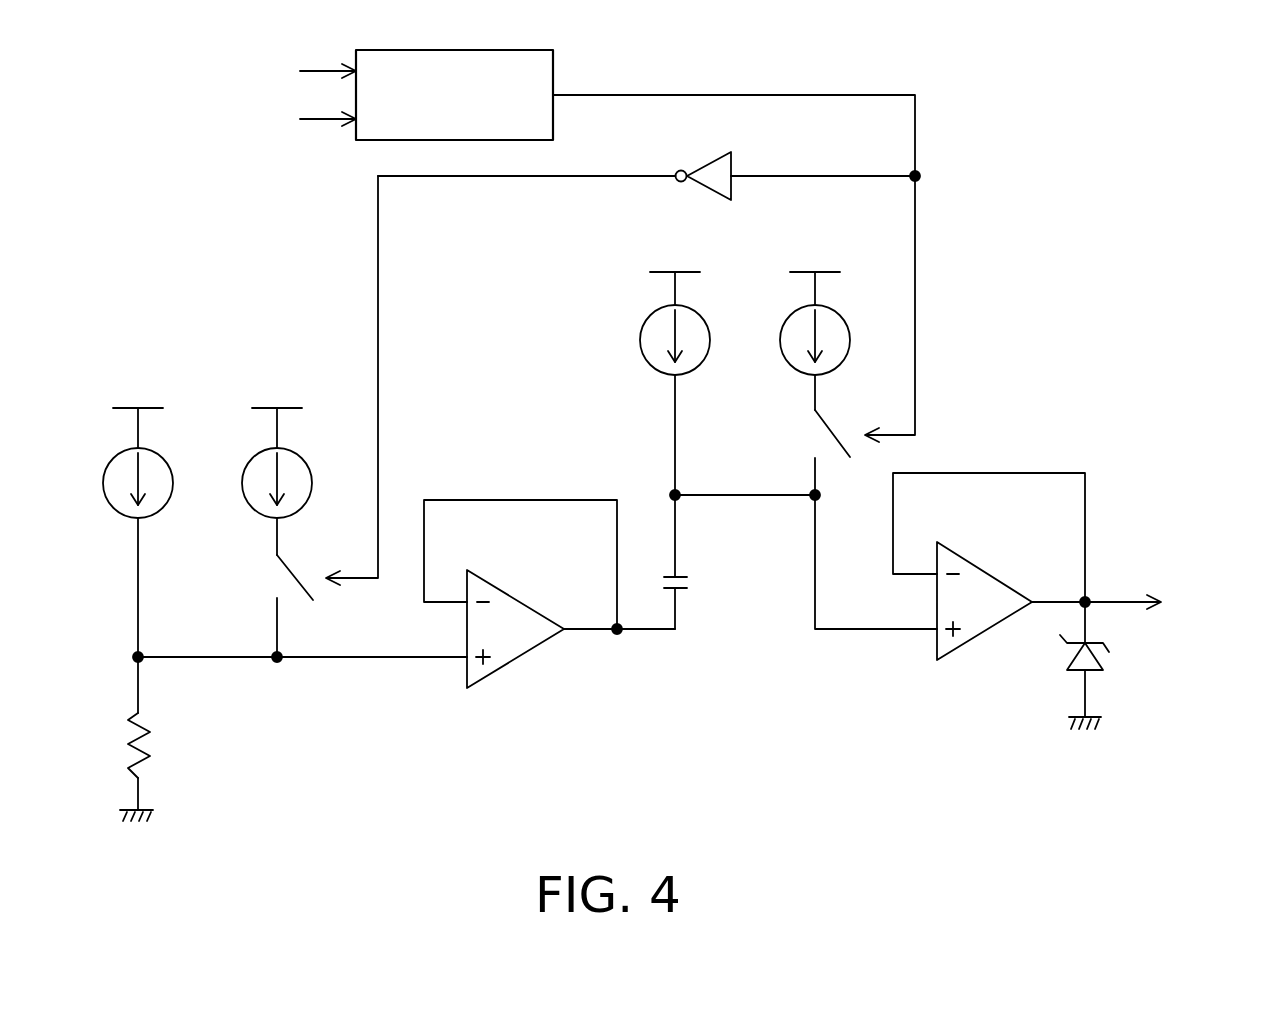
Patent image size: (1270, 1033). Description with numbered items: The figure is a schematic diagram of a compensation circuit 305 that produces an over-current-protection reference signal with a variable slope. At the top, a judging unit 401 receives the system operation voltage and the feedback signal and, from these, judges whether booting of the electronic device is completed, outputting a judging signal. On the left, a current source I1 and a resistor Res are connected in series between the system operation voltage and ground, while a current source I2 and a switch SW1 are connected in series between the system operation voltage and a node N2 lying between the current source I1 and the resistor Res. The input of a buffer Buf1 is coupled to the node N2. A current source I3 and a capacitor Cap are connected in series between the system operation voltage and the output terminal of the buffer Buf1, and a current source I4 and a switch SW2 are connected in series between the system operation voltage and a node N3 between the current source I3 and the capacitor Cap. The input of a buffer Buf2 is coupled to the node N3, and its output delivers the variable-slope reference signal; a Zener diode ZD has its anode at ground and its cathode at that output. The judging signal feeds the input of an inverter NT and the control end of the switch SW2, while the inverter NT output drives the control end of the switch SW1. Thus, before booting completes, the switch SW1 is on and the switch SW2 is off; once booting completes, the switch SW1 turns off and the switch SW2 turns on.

The judging unit 401 is at (455, 49).
The compensation circuit 305 is at (1256, 818).
The current source I1 is at (150, 504).
The current source I2 is at (291, 453).
The current source I3 is at (690, 353).
The current source I4 is at (829, 311).
The switch SW1 is at (269, 606).
The switch SW2 is at (812, 452).
The inverter NT is at (708, 163).
The node N2 is at (133, 657).
The node N3 is at (671, 494).
The buffer Buf1 is at (514, 599).
The buffer Buf2 is at (984, 572).
The capacitor Cap is at (672, 562).
The resistor Res is at (157, 739).
The Zener diode ZD is at (1102, 665).